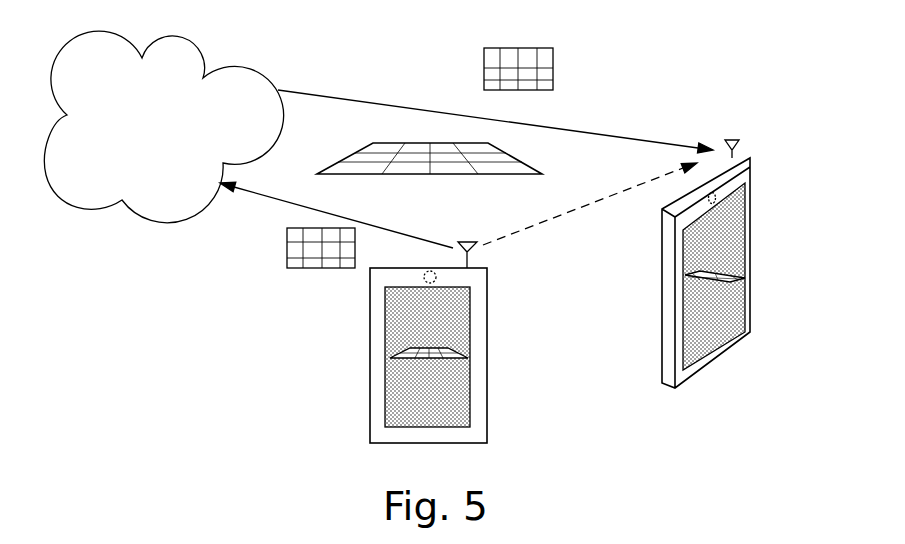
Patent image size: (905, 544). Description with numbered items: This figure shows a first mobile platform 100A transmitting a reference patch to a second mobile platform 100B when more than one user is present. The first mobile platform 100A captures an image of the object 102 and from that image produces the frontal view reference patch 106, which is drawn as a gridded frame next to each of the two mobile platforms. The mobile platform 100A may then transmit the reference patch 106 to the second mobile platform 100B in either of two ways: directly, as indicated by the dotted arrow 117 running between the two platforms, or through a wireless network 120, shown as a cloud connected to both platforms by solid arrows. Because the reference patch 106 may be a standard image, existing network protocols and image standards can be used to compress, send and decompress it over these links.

The wireless network 120 is at (150, 42).
The frontal view reference patch 106 is at (553, 50).
The object 102 is at (542, 174).
The first mobile platform 100A is at (370, 404).
The second mobile platform 100B is at (750, 161).
The dotted arrow 117 is at (548, 225).